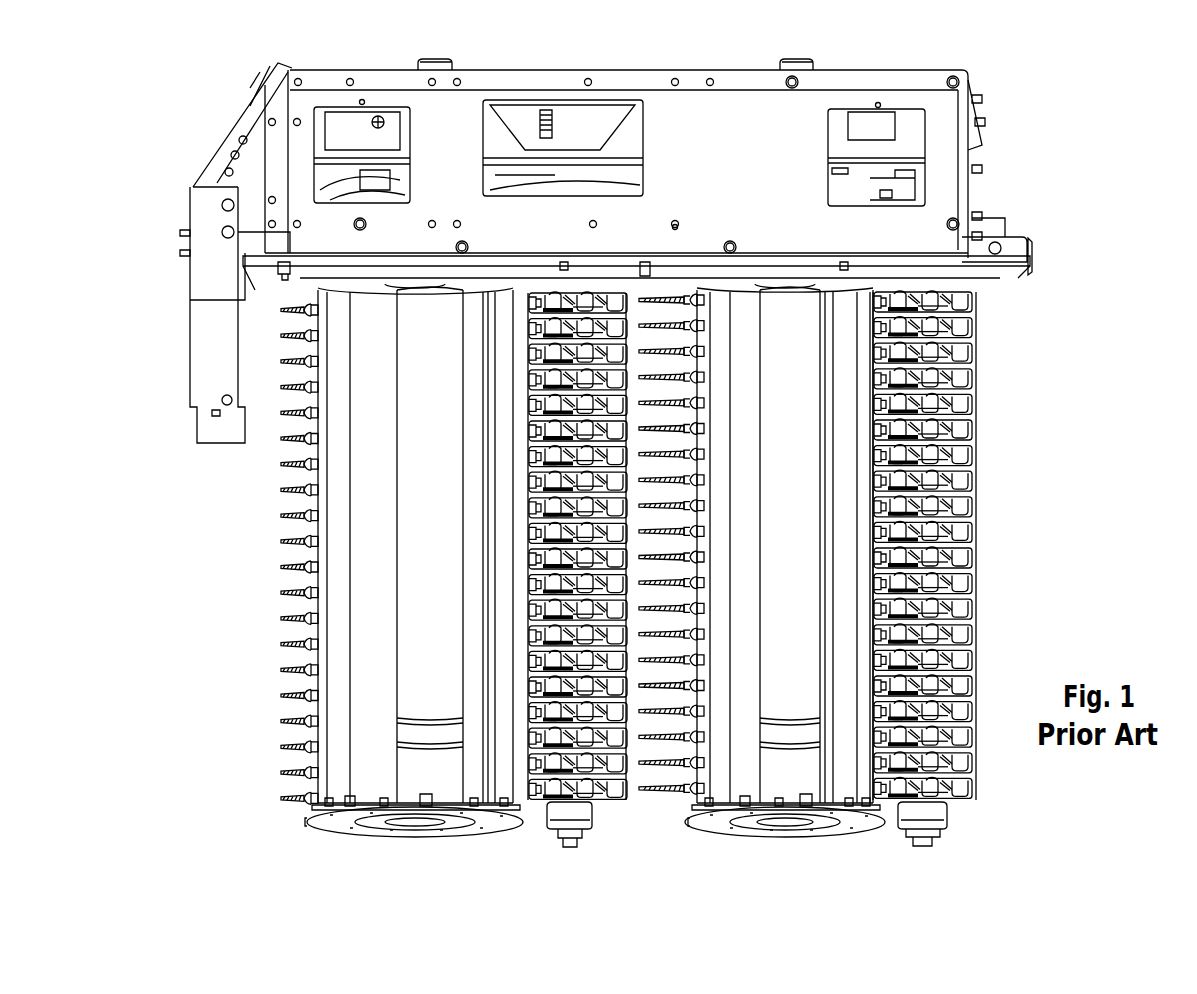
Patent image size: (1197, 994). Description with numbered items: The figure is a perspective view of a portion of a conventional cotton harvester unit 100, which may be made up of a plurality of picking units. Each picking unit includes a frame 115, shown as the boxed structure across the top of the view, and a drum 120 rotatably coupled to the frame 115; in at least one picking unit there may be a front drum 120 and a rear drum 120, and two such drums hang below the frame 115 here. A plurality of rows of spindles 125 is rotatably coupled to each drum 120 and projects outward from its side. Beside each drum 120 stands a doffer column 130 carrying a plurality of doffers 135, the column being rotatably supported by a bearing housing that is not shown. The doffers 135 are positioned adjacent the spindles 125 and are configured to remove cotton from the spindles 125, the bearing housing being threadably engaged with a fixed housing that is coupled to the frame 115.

The cotton harvester unit 100 is at (1090, 115).
The frame 115 is at (953, 188).
The drum 120 is at (448, 551).
The spindles 125 is at (290, 592).
The doffer column 130 is at (505, 482).
The doffers 135 is at (528, 650).